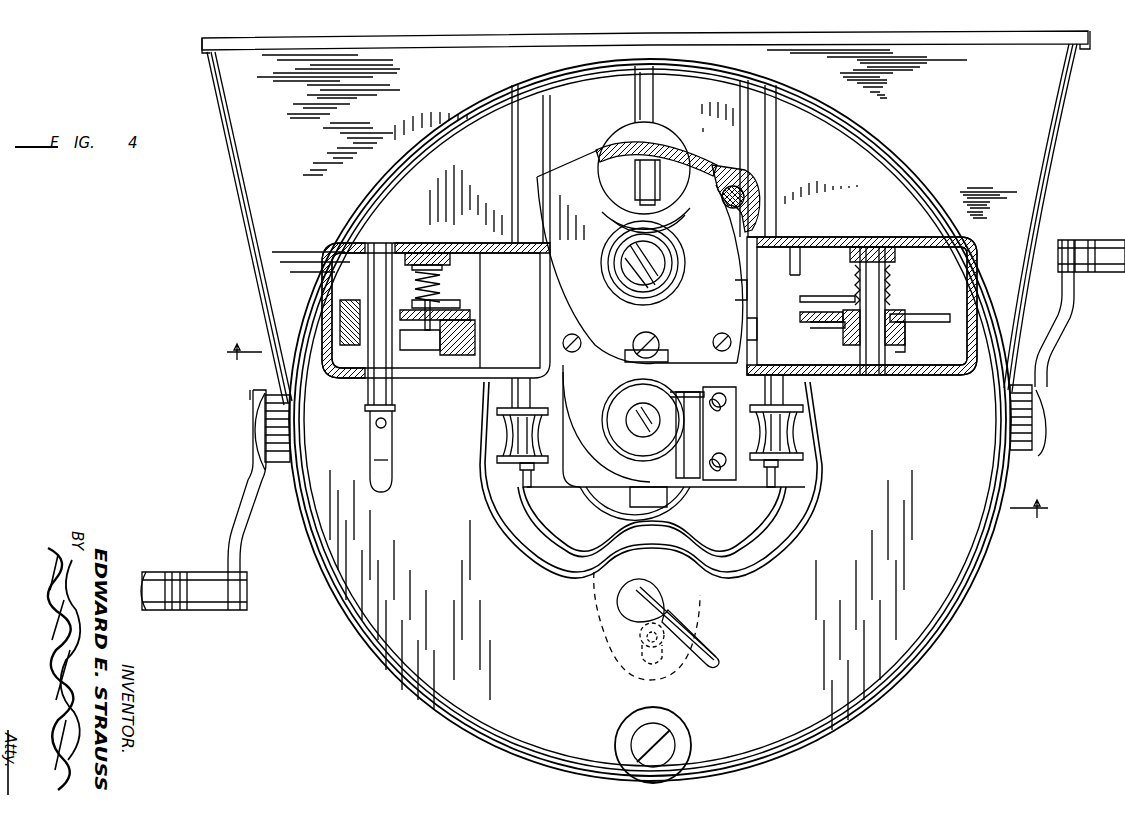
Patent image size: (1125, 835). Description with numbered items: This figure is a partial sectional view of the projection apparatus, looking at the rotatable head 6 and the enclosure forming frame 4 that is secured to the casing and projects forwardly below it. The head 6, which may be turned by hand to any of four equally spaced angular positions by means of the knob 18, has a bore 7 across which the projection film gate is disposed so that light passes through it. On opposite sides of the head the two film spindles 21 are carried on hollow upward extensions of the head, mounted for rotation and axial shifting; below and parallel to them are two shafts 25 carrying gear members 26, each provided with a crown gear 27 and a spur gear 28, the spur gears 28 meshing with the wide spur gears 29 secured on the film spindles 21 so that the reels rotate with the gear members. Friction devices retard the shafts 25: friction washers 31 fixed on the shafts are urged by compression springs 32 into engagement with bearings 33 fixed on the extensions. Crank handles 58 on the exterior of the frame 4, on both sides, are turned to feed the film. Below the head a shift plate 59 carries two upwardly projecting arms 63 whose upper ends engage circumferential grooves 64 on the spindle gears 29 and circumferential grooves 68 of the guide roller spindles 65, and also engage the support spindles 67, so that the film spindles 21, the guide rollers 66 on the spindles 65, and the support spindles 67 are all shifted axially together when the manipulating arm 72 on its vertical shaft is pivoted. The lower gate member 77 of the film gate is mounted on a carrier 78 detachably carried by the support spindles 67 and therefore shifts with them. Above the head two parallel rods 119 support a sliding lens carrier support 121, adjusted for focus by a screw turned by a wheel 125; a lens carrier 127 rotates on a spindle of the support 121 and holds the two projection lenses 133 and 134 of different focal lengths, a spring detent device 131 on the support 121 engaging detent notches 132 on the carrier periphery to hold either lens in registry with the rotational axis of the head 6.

The enclosure forming frame 4 is at (236, 160).
The head 6 is at (372, 208).
The bore 7 is at (637, 442).
The knob 18 is at (624, 735).
The film spindles 21 is at (394, 488).
The shafts 25 is at (445, 288).
The gear members 26 is at (476, 345).
The crown gears 27 is at (908, 338).
The spur gears 28 is at (470, 324).
The spur gears 29 is at (350, 308).
The friction washers 31 is at (422, 256).
The compression springs 32 is at (417, 287).
The bearings 33 is at (882, 242).
The crank handles 58 is at (242, 512).
The shift plate 59 is at (736, 292).
The arms 63 is at (455, 300).
The circumferential grooves 64 is at (360, 292).
The guide roller spindles 65 is at (515, 396).
The guide rollers 66 is at (505, 440).
The support spindles 67 is at (590, 510).
The circumferential grooves 68 is at (790, 298).
The manipulating arm 72 is at (634, 604).
The lower gate member 77 is at (690, 482).
The carrier 78 is at (716, 482).
The rods 119 is at (756, 190).
The lens carrier support 121 is at (568, 170).
The wheel 125 is at (625, 128).
The lens carrier 127 is at (712, 255).
The spring detent device 131 is at (636, 198).
The detent notches 132 is at (616, 219).
The projection lens 133 is at (628, 414).
The projection lens 134 is at (672, 282).